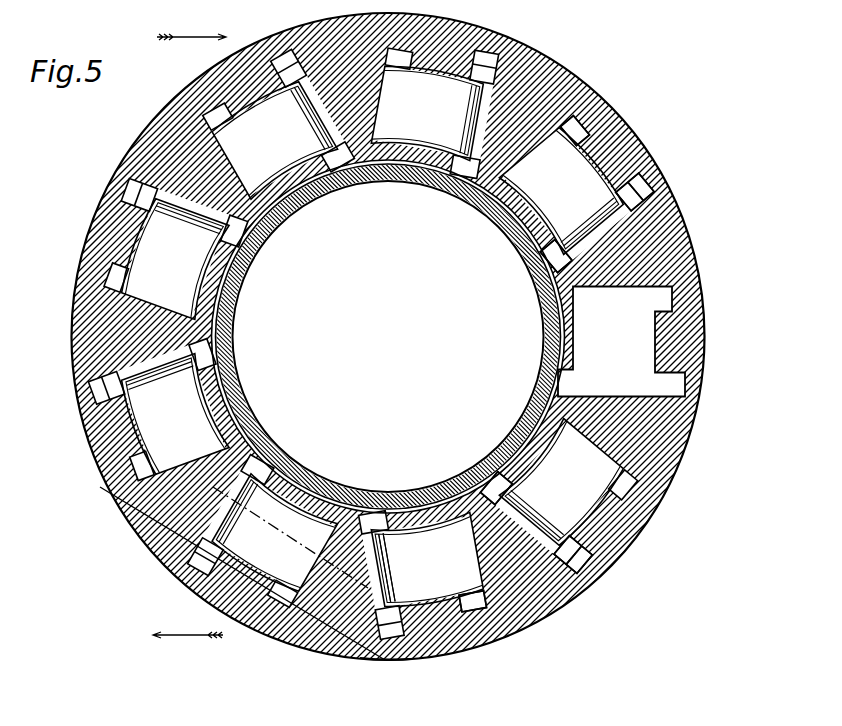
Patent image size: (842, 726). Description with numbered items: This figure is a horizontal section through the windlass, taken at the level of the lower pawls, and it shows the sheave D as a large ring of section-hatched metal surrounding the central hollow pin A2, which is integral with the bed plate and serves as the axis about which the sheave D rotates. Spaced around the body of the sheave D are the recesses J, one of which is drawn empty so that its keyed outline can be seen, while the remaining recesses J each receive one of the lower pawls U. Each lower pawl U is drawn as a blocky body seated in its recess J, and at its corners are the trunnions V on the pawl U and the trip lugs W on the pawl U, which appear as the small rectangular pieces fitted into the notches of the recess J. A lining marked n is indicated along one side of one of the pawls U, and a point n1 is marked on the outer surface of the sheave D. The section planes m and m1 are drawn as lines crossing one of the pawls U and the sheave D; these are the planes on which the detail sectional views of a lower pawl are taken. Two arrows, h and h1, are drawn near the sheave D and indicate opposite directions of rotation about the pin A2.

The sheave D is at (677, 435).
The central hollow pin A2 is at (242, 398).
The recesses J is at (621, 342).
The lower pawls U is at (371, 337).
The trunnions V is at (557, 262).
The trip lugs W is at (572, 129).
The insulating lining n is at (382, 593).
The outer surface point n1 is at (387, 662).
The coil center line m is at (213, 487).
The reference line m1 is at (229, 564).
The direction of rotation arrow h is at (191, 26).
The opposite direction arrow h1 is at (188, 622).